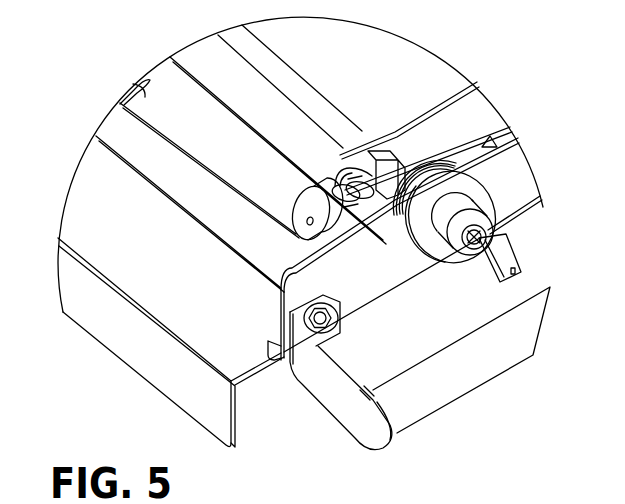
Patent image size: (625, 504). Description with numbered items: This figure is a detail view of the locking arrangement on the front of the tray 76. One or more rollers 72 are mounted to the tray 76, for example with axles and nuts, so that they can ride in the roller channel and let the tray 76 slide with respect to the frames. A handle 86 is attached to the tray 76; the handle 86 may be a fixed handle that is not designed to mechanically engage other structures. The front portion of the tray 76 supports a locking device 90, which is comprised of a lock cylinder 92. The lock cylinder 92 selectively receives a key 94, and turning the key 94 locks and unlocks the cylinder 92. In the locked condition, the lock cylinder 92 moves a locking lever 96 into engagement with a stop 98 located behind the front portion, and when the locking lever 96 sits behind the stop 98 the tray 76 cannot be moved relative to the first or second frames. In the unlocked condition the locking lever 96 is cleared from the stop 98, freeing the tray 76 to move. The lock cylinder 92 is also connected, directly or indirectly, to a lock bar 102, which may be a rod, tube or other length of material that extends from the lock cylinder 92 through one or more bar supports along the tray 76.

The roller 72 is at (298, 204).
The tray 76 is at (147, 330).
The handle 86 is at (450, 390).
The locking device 90 is at (439, 136).
The lock cylinder 92 is at (474, 215).
The key 94 is at (517, 261).
The locking lever 96 is at (360, 167).
The stop 98 is at (335, 185).
The lock bar 102 is at (306, 80).